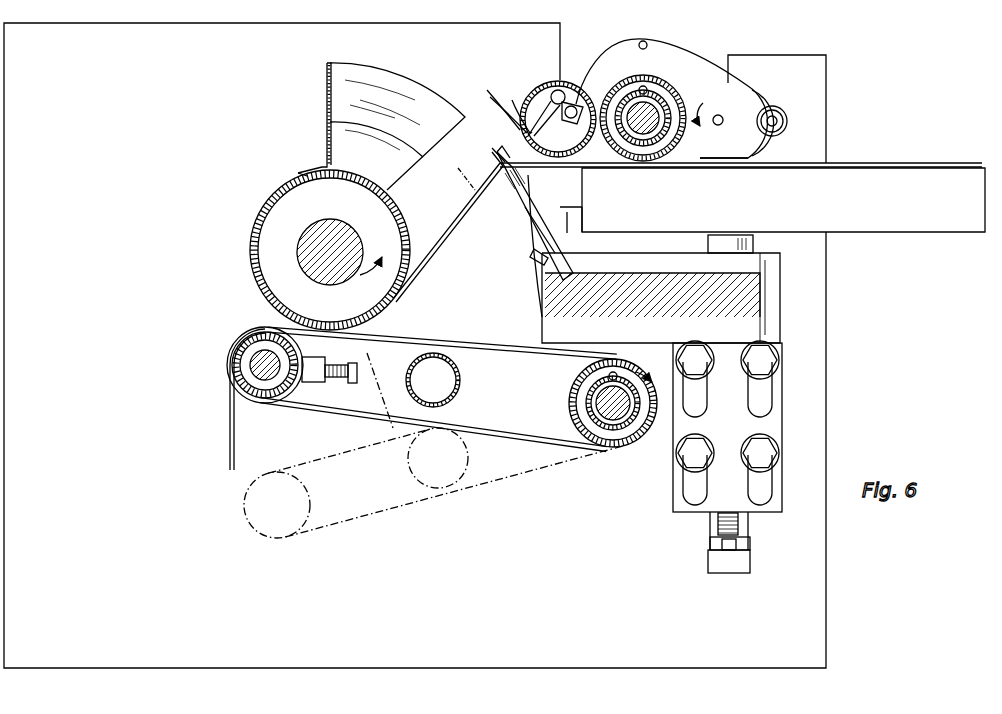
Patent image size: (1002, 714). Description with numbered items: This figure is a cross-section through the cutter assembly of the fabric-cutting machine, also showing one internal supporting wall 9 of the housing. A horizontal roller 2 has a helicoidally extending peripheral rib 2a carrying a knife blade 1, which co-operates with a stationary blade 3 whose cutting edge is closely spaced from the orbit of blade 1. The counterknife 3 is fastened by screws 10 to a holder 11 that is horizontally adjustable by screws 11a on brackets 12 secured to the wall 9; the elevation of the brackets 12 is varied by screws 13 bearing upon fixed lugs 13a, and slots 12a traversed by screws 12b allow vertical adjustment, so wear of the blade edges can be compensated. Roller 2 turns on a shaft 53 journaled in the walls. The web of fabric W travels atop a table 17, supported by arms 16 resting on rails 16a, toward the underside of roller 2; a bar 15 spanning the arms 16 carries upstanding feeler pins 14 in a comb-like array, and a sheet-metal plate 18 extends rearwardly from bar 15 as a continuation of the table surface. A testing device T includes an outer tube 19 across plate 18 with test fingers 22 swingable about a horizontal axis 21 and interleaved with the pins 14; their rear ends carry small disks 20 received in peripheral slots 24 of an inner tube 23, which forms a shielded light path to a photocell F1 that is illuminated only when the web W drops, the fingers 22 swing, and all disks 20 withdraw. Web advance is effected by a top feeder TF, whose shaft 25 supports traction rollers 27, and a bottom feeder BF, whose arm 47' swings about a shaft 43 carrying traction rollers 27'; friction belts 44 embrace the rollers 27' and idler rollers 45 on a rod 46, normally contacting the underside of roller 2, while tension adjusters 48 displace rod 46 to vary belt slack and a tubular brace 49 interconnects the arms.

The knife blade 1 is at (327, 98).
The horizontal roller 2 is at (275, 198).
The helicoidally extending peripheral rib 2a is at (320, 147).
The stationary blade 3 is at (558, 200).
The internal wall 9 is at (818, 333).
The screws 10 is at (533, 254).
The holder 11 is at (542, 293).
The screws 11a is at (752, 243).
The brackets 12 is at (683, 435).
The slots 12a is at (767, 397).
The screws 12b is at (745, 453).
The screws 13 is at (732, 547).
The fixed lugs 13a is at (747, 555).
The feeler members or pins 14 is at (496, 152).
The bar 15 is at (530, 188).
The arms 16 is at (532, 213).
The rails 16a is at (565, 212).
The table 17 is at (908, 166).
The sheet-metal plate 18 is at (680, 180).
The outer tube 19 is at (512, 100).
The small disks 20 is at (560, 92).
The horizontal axis 21 is at (487, 90).
The test fingers 22 is at (490, 97).
The inner tube 23 is at (656, 36).
The peripheral slots 24 is at (544, 102).
The shaft 25 is at (657, 105).
The traction rollers 27 is at (747, 81).
The traction rollers 27' is at (613, 448).
The shaft 43 is at (604, 420).
The friction belts 44 is at (430, 343).
The idler rollers 45 is at (236, 378).
The rod 46 is at (270, 375).
The arm 47' is at (434, 428).
The tension adjusters 48 is at (318, 382).
The tubular brace 49 is at (460, 385).
The shaft 53 is at (305, 258).
The web of fabric W is at (855, 146).
The testing device T is at (536, 77).
The top feeder TF is at (698, 76).
The photocell F1 is at (578, 104).
The bottom feeder BF is at (521, 455).